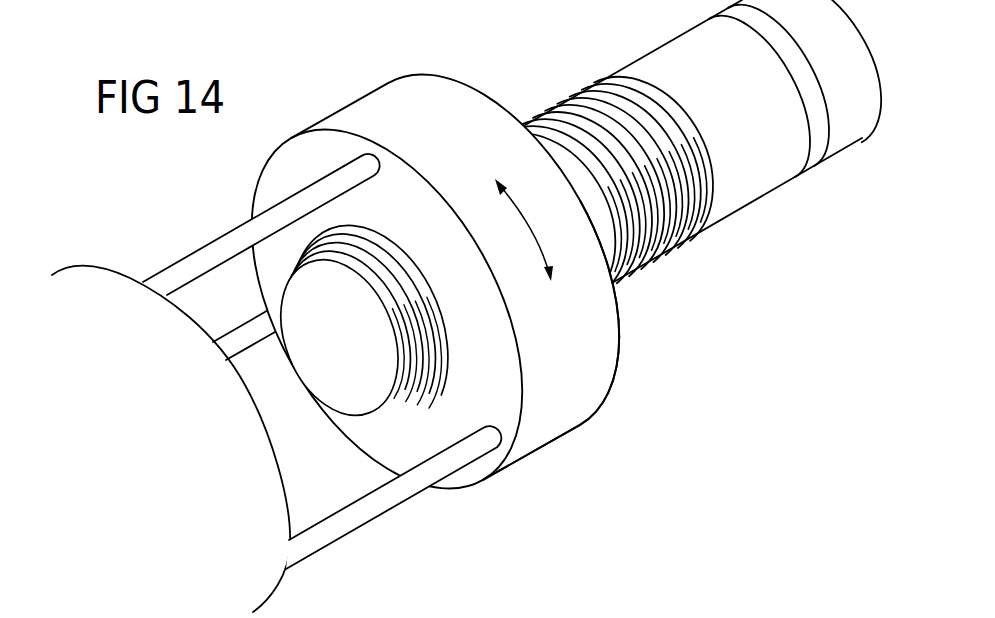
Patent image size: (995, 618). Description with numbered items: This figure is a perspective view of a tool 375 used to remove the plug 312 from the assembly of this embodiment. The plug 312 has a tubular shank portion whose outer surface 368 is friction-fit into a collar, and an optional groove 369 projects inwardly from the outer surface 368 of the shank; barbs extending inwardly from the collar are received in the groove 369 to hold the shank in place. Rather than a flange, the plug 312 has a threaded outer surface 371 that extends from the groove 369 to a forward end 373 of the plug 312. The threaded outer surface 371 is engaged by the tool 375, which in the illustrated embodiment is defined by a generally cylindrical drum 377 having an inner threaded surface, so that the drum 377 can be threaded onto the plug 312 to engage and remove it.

The plug 312 is at (572, 97).
The outer surface 368 is at (842, 127).
The groove 369 is at (687, 58).
The threaded outer surface 371 is at (626, 245).
The forward end 373 is at (384, 410).
The tool 375 is at (349, 102).
The drum 377 is at (542, 432).